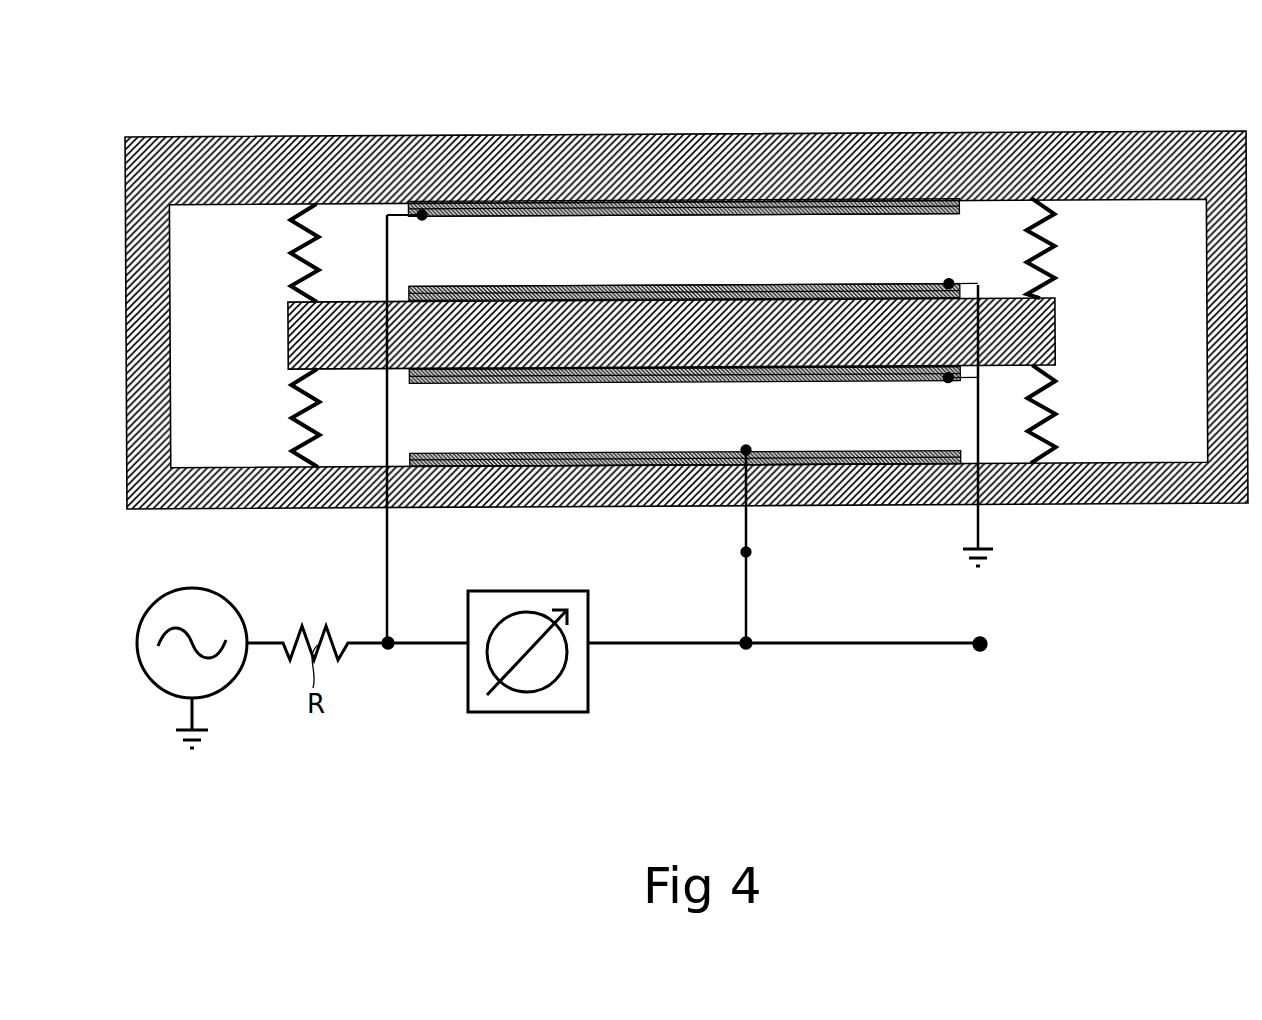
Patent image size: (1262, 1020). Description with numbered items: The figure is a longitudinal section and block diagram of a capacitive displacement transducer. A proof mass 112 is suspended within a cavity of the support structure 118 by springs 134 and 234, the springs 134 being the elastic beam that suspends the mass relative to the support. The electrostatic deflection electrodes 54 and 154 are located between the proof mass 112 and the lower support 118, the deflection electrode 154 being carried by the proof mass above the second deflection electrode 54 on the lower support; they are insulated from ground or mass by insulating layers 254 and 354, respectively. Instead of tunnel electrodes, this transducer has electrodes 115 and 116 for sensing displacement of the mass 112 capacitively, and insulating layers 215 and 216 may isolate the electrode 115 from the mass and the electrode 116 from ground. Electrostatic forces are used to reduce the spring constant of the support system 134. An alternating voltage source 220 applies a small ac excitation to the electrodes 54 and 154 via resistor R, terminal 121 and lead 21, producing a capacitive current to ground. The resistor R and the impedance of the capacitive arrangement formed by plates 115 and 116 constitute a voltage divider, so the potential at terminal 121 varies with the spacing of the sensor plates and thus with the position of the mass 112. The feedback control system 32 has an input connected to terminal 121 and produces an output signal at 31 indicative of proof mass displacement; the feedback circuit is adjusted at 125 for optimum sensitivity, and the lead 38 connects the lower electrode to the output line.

The support structure 118 is at (272, 168).
The insulating layer 216 is at (673, 198).
The electrode 116 is at (690, 216).
The electrode 115 is at (852, 284).
The insulating layer 215 is at (916, 284).
The proof mass 112 is at (1040, 333).
The springs 234 is at (300, 263).
The springs 134 is at (300, 429).
The insulating layer 354 is at (551, 383).
The deflection electrode 154 is at (638, 383).
The second deflection electrode 54 is at (851, 451).
The insulating layer 254 is at (887, 466).
The output lead from lower electrode 38 is at (748, 552).
The lead 21 is at (388, 560).
The terminal 121 is at (390, 650).
The feedback control system 32 is at (527, 591).
The adjustment 125 is at (543, 693).
The output 31 is at (983, 641).
The alternating voltage source 220 is at (198, 605).